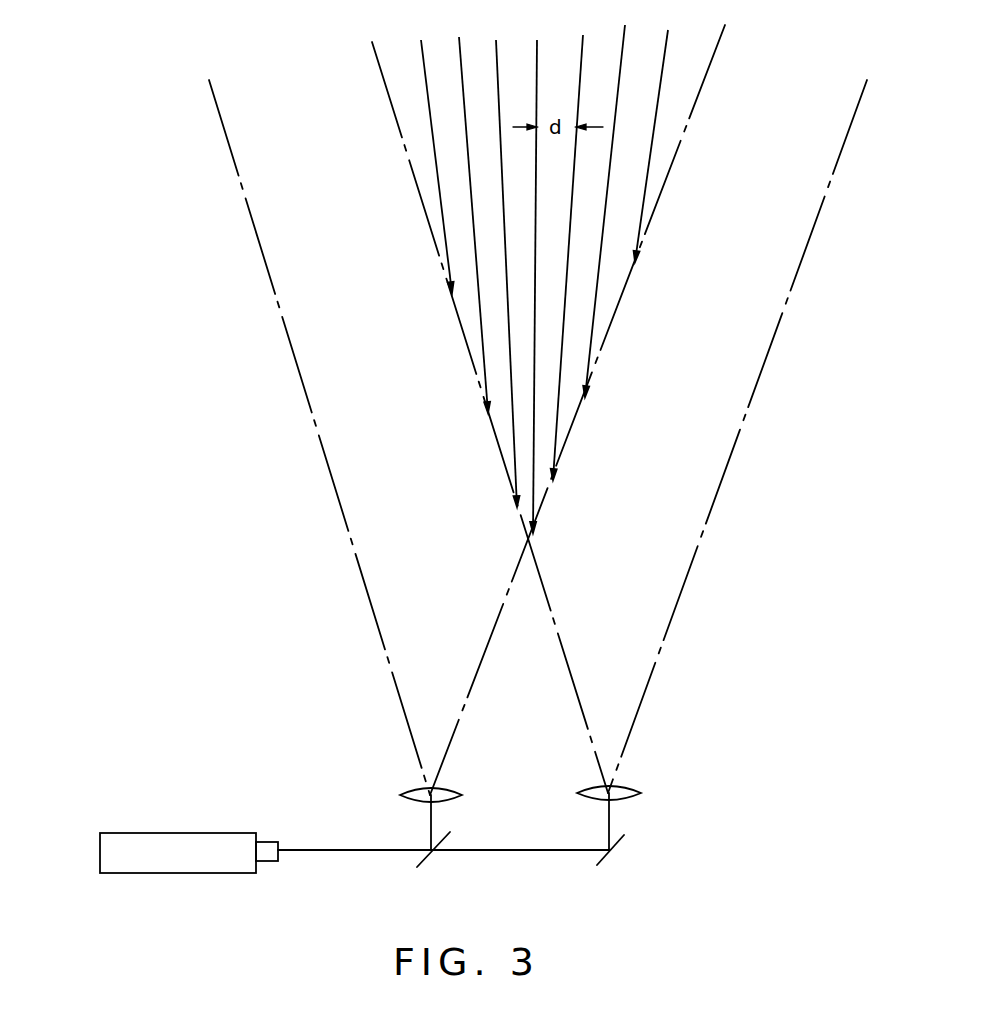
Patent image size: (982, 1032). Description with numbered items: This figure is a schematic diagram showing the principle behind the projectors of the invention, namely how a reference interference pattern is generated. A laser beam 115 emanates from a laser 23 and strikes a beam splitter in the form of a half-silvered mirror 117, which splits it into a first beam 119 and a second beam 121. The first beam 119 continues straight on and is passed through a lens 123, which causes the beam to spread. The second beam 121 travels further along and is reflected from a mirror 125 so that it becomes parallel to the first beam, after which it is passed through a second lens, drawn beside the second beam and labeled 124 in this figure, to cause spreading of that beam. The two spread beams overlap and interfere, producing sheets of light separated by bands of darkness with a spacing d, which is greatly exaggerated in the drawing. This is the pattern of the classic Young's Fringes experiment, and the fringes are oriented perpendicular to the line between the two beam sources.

The laser 23 is at (183, 873).
The laser beam 115 is at (341, 850).
The half-silvered mirror 117 is at (425, 862).
The first beam 119 is at (432, 817).
The second beam 121 is at (545, 850).
The lens 123 is at (455, 790).
The lens 124 is at (635, 788).
The mirror 125 is at (605, 862).